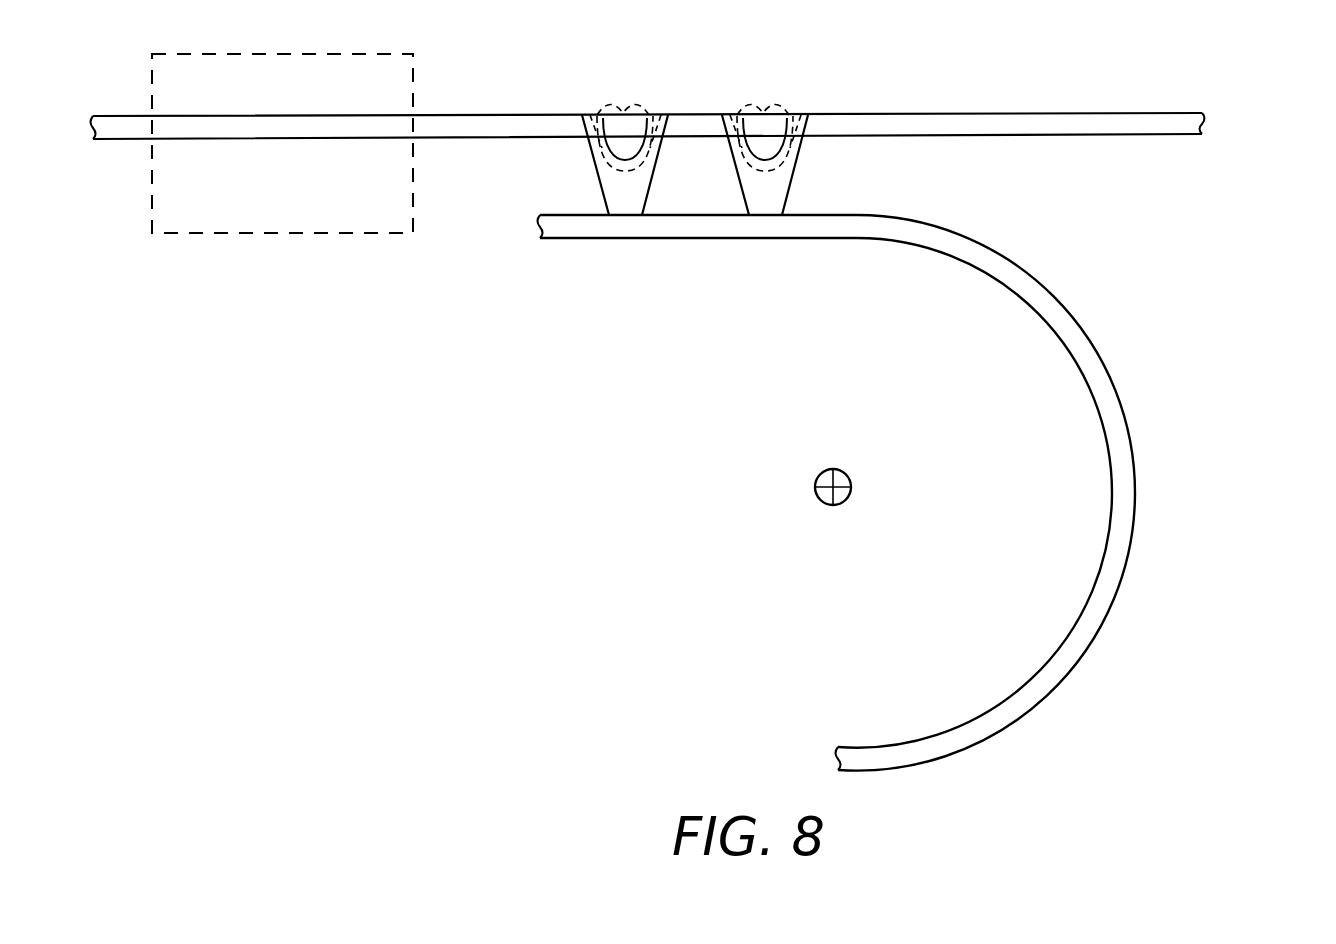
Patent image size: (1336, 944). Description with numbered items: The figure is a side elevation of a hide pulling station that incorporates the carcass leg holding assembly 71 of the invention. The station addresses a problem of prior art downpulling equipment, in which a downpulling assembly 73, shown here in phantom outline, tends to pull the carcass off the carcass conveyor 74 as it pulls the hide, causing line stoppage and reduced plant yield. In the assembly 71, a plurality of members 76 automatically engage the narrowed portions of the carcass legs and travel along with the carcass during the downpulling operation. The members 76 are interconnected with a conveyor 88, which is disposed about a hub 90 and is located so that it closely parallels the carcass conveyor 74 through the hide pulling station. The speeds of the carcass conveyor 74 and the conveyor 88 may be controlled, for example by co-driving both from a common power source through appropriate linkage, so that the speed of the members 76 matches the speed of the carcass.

The carcass leg holding assembly 71 is at (937, 493).
The downpulling assembly 73 is at (317, 235).
The carcass conveyor 74 is at (1010, 113).
The members 76 is at (602, 176).
The conveyor 88 is at (1030, 271).
The hub 90 is at (1058, 372).